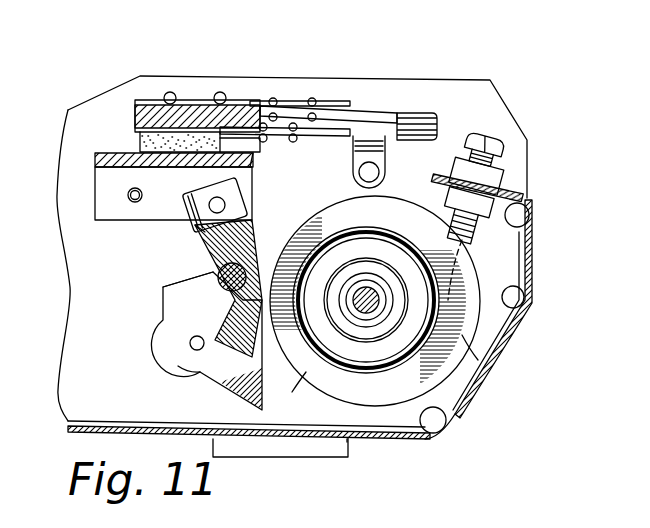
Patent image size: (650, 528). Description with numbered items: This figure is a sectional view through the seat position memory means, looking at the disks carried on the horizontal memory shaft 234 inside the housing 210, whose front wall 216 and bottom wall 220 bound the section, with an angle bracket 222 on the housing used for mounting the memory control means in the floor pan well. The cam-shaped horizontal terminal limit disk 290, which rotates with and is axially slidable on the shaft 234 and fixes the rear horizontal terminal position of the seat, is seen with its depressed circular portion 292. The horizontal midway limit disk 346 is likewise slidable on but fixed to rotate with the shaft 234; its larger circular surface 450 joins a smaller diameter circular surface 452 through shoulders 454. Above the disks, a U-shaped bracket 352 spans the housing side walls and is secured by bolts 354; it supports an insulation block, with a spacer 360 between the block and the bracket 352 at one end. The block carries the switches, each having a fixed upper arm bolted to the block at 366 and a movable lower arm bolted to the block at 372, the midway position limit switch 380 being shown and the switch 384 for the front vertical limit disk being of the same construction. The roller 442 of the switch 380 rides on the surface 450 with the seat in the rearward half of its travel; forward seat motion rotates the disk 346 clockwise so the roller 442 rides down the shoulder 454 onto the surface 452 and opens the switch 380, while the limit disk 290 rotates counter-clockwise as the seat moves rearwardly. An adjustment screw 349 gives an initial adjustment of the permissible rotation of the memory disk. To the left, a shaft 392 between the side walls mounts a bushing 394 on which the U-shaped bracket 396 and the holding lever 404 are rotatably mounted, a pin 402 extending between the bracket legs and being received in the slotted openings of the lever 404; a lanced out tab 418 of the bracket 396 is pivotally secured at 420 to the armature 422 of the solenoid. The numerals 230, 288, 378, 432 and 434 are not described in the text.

The housing 210 is at (75, 391).
The front wall 216 is at (515, 332).
The bottom wall 220 is at (405, 437).
The angle brackets 222 is at (307, 447).
The wheel rim ring 230 is at (318, 222).
The horizontal memory shaft 234 is at (374, 310).
The bracket pivot hole 288 is at (415, 226).
The limit disk 290 is at (289, 233).
The depressed circular portion 292 is at (465, 262).
The horizontal midway limit disk 346 is at (372, 398).
The adjustment screw 349 is at (498, 143).
The U-shaped bracket 352 is at (95, 160).
The bolts 354 is at (128, 195).
The spacer 360 is at (357, 113).
The bolted connection of fixed switch arm 366 is at (198, 97).
The bolted connection of movable switch arm 372 is at (250, 168).
The ledge 378 is at (145, 150).
The midway position limit switch 380 is at (140, 136).
The switch 384 is at (340, 280).
The shaft 392 is at (218, 275).
The bushing 394 is at (205, 279).
The U-shaped bracket 396 is at (188, 308).
The pin 402 is at (190, 344).
The holding lever 404 is at (187, 370).
The lanced out tab 418 is at (217, 233).
The pivotal connection 420 is at (212, 203).
The armature 422 is at (198, 222).
The wheel lower edge 432 is at (297, 388).
The ring 434 is at (300, 298).
The roller 442 is at (388, 160).
The circular surface 450 is at (465, 352).
The smaller diameter circular surface 452 is at (292, 372).
The shoulders 454 is at (330, 222).